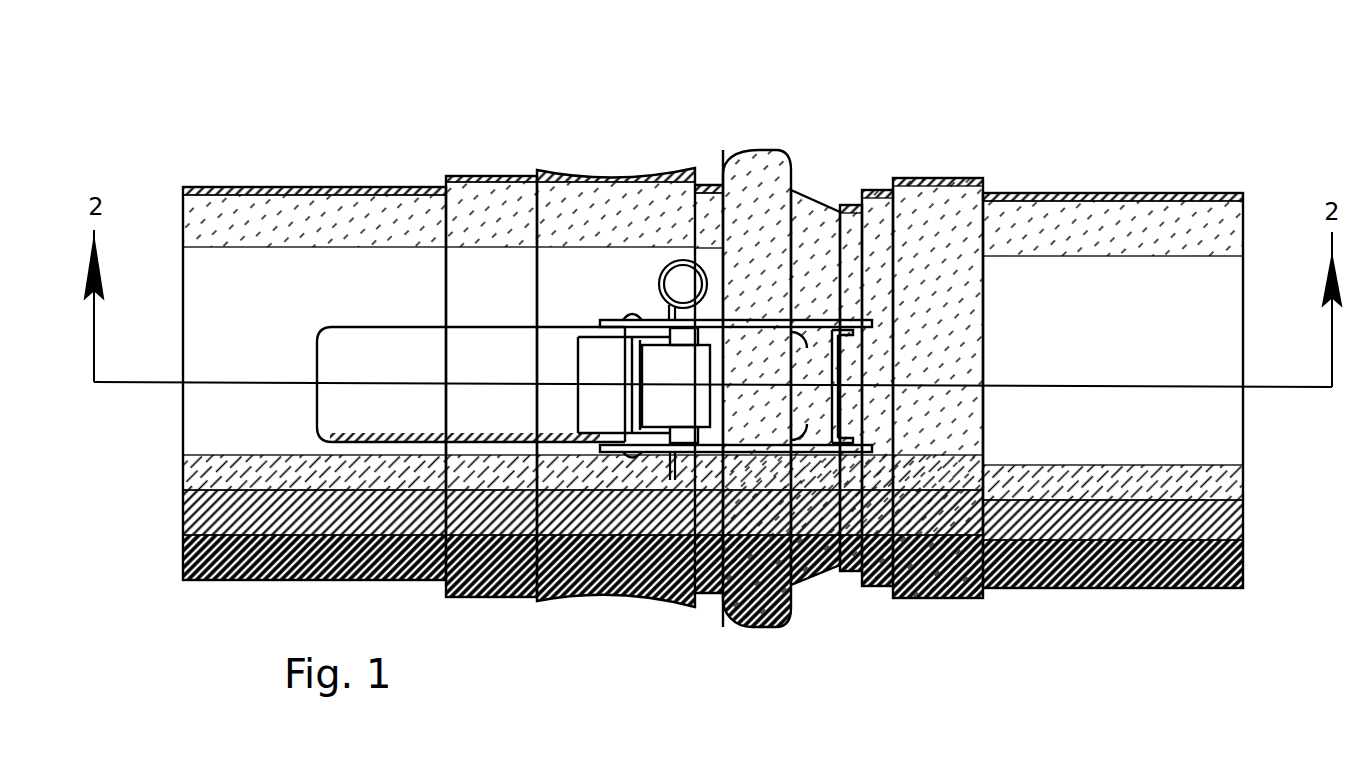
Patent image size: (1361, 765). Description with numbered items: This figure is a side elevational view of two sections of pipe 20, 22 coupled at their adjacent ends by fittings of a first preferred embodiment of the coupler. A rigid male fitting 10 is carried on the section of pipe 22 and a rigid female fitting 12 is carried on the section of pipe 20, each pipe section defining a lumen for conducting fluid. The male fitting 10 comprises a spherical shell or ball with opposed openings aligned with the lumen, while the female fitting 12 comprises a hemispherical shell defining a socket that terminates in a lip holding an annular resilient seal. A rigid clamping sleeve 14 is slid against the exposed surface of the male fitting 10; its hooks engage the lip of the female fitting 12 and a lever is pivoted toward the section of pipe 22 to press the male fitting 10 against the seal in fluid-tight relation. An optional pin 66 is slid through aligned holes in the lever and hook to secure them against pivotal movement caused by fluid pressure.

The male fitting 10 is at (708, 200).
The female fitting 12 is at (770, 203).
The clamping sleeve 14 is at (585, 212).
The section of pipe 20 is at (1050, 235).
The section of pipe 22 is at (290, 223).
The pin 66 is at (655, 289).